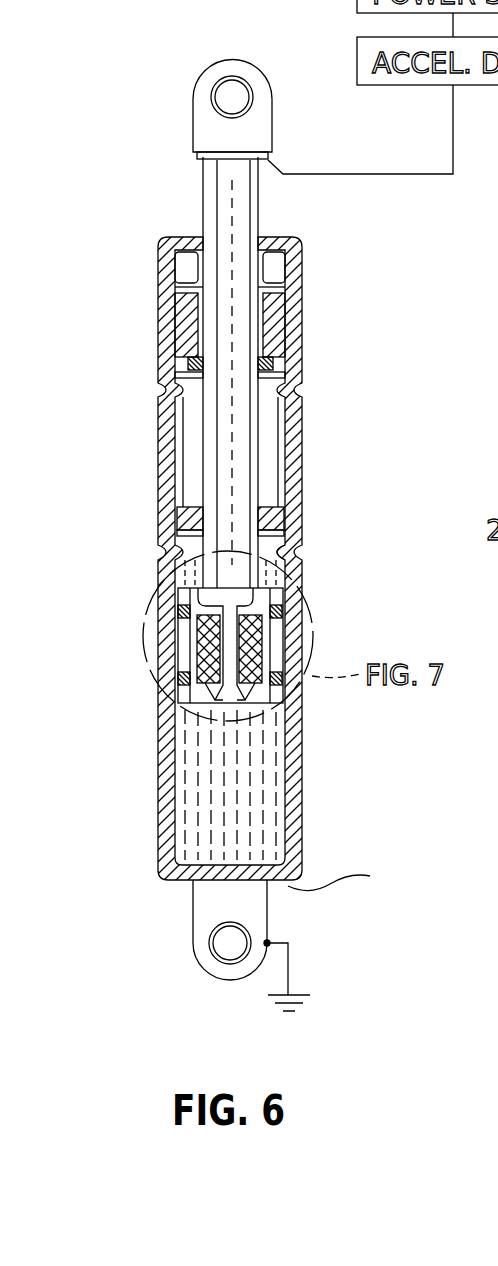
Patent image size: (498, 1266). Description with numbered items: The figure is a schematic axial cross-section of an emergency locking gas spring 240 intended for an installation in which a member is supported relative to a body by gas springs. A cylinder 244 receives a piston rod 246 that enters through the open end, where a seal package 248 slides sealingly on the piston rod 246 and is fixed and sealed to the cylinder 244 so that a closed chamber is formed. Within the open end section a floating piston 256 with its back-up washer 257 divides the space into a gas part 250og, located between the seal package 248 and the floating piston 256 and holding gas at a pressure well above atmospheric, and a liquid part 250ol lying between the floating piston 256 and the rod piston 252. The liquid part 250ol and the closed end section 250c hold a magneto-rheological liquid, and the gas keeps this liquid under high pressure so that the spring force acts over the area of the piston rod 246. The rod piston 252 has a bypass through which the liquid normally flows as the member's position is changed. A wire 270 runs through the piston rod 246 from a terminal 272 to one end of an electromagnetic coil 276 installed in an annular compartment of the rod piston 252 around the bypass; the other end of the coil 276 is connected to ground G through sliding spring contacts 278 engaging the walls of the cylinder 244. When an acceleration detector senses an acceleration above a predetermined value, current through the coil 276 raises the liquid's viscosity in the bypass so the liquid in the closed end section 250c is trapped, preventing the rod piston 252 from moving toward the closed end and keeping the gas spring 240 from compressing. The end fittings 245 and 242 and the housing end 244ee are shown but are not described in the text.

The emergency locking gas spring 240 is at (148, 78).
The upper mounting eye 245 is at (272, 103).
The terminal 272 is at (278, 168).
The wire 270 is at (207, 188).
The piston rod 246 is at (259, 206).
The seal package 248 is at (325, 255).
The gas part 250og is at (267, 422).
The floating piston 256 is at (300, 521).
The back-up washer 257 is at (291, 545).
The liquid part 250ol is at (178, 556).
The electromagnetic coil 276 is at (198, 643).
The rod piston 252 is at (270, 640).
The cylinder 244 is at (300, 758).
The sliding spring contacts 278 is at (277, 712).
The closed end section 250c is at (243, 824).
The housing end 244ee is at (371, 878).
The lower mounting eye 242 is at (267, 907).
The ground G is at (285, 1010).